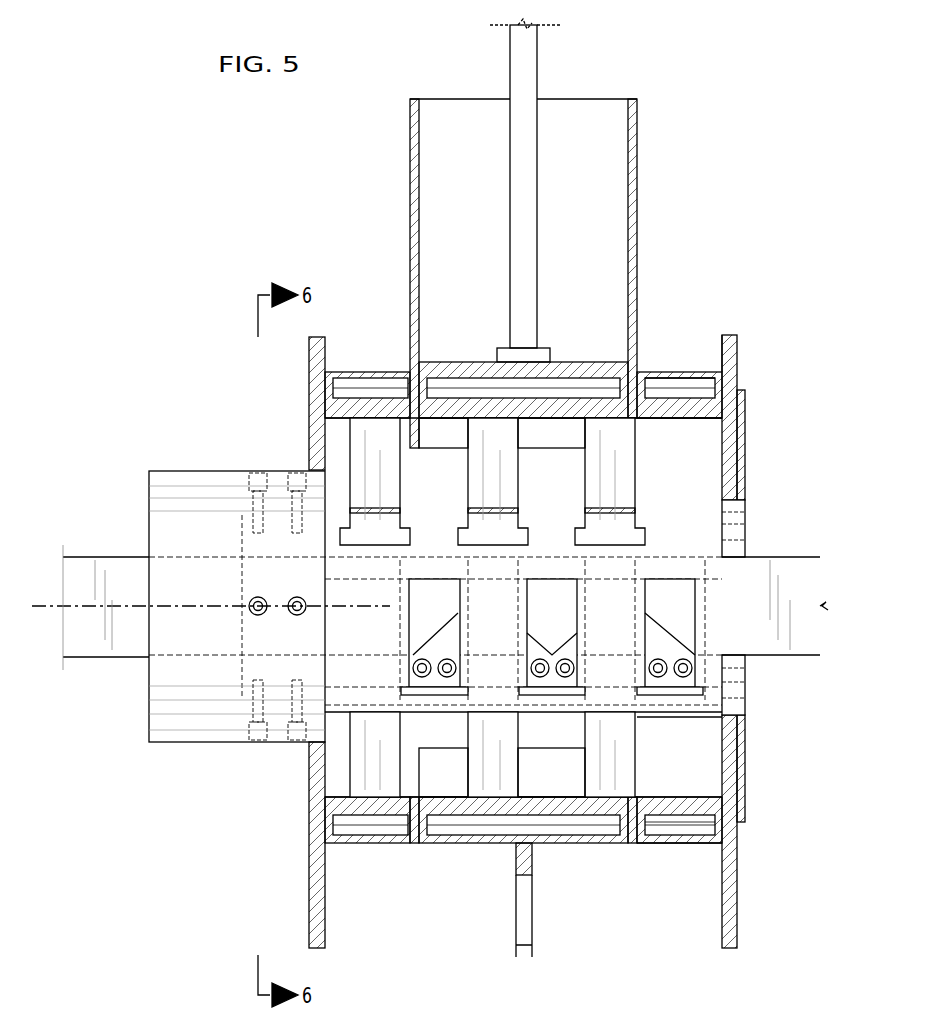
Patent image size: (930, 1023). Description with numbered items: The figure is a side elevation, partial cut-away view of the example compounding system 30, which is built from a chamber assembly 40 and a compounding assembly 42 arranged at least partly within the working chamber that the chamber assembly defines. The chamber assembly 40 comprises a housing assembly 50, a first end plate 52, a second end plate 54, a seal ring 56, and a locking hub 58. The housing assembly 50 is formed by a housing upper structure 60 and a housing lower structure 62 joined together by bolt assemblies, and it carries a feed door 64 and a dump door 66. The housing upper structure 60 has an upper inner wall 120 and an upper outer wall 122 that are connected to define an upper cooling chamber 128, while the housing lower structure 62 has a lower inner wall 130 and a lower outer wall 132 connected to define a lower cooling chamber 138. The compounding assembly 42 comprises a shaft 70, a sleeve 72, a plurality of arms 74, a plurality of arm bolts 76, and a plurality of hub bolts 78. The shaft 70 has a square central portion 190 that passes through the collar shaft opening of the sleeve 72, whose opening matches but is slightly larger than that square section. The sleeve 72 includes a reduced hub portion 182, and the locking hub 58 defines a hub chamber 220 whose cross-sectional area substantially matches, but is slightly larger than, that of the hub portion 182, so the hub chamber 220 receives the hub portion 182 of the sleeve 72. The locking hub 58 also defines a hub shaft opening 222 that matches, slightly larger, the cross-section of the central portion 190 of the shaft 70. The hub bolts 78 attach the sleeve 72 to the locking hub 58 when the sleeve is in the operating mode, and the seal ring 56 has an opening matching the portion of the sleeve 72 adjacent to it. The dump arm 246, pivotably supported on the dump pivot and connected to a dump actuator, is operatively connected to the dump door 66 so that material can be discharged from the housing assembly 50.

The compounding system 30 is at (252, 376).
The chamber assembly 40 is at (383, 368).
The compounding assembly 42 is at (700, 718).
The housing assembly 50 is at (368, 368).
The first end plate 52 is at (308, 905).
The second end plate 54 is at (733, 900).
The seal ring 56 is at (738, 458).
The locking hub 58 is at (165, 745).
The housing upper structure 60 is at (665, 370).
The housing lower structure 62 is at (660, 845).
The feed door 64 is at (480, 368).
The dump door 66 is at (558, 846).
The shaft 70 is at (780, 565).
The sleeve 72 is at (697, 507).
The arms 74 is at (400, 470).
The arm bolts 76 is at (447, 658).
The hub bolts 78 is at (297, 478).
The upper inner wall 120 is at (697, 408).
The upper outer wall 122 is at (700, 372).
The upper cooling chamber 128 is at (700, 392).
The lower inner wall 130 is at (690, 805).
The lower outer wall 132 is at (690, 843).
The lower cooling chamber 138 is at (700, 822).
The hub portion 182 is at (262, 540).
The central portion 190 is at (110, 660).
The hub chamber 220 is at (280, 520).
The hub shaft opening 222 is at (160, 575).
The dump arm 246 is at (516, 905).